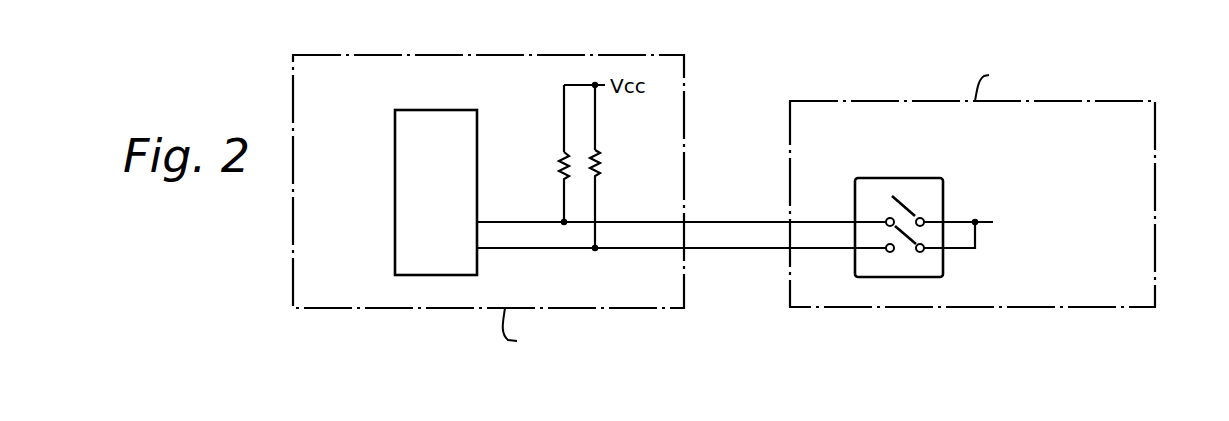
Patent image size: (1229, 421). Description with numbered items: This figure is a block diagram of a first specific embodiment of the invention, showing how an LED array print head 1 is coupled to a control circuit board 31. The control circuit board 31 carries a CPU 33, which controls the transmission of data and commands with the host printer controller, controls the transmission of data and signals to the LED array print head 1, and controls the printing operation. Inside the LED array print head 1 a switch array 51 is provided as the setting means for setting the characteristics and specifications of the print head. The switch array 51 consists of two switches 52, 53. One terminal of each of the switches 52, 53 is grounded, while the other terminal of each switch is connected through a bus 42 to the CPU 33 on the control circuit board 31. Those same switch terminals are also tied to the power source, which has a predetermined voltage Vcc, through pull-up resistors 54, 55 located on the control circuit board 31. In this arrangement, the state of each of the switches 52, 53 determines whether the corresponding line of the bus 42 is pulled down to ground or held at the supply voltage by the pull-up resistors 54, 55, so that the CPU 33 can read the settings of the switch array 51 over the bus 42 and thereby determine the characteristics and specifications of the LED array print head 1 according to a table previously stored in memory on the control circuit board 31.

The LED array print head 1 is at (1155, 196).
The control circuit board 31 is at (575, 55).
The CPU 33 is at (453, 265).
The bus 42 is at (742, 223).
The switch array 51 is at (928, 277).
The switch 52 is at (898, 196).
The switch 53 is at (917, 228).
The pull-up resistor 54 is at (570, 158).
The pull-up resistor 55 is at (606, 163).